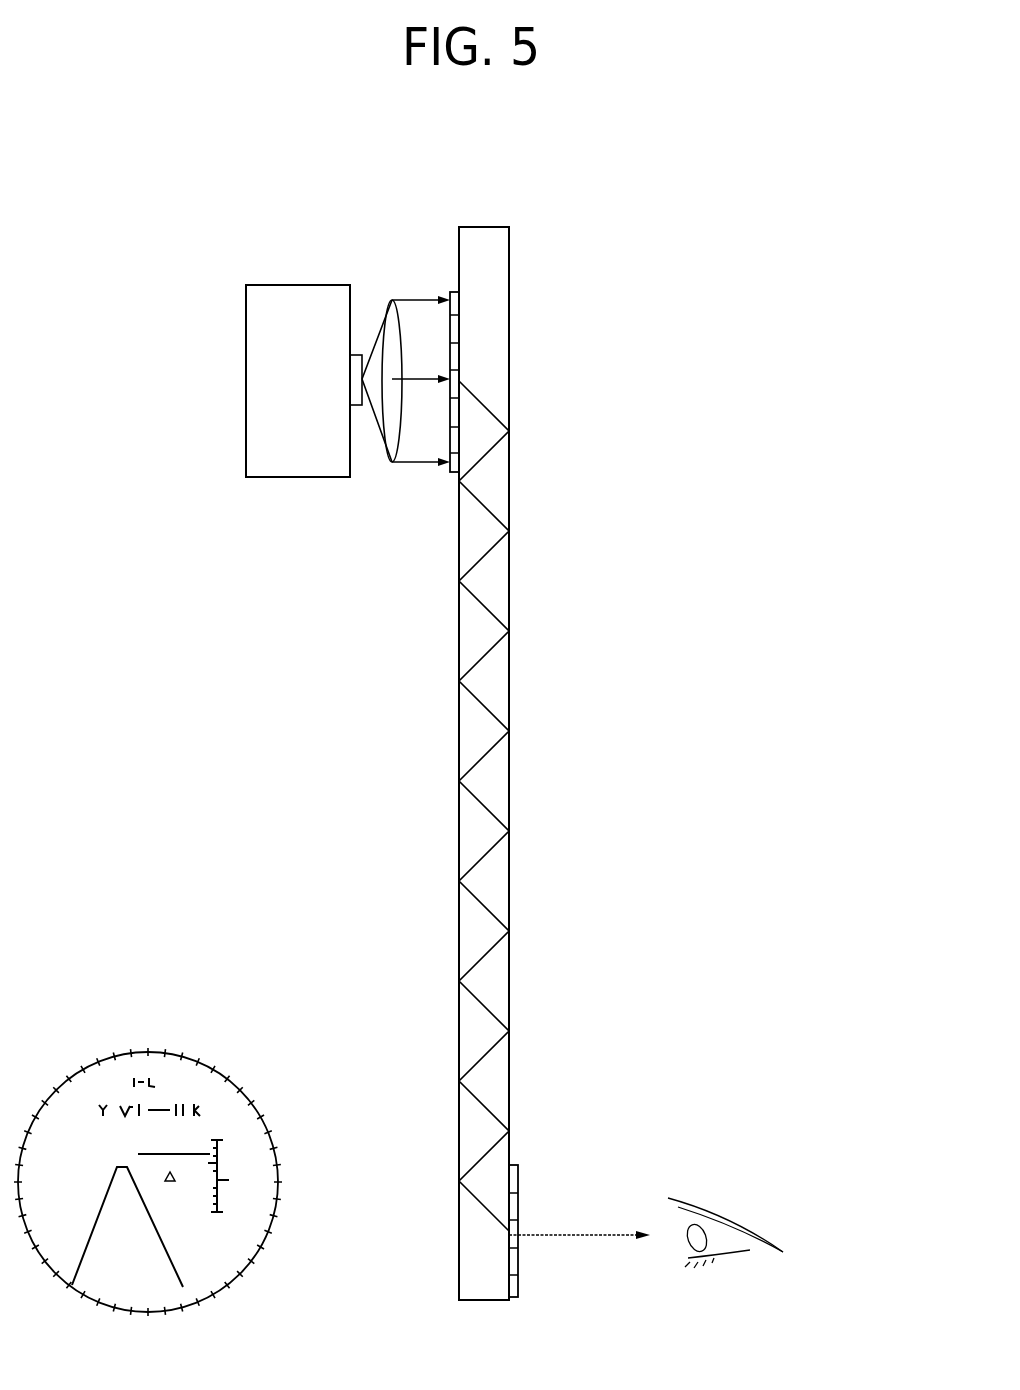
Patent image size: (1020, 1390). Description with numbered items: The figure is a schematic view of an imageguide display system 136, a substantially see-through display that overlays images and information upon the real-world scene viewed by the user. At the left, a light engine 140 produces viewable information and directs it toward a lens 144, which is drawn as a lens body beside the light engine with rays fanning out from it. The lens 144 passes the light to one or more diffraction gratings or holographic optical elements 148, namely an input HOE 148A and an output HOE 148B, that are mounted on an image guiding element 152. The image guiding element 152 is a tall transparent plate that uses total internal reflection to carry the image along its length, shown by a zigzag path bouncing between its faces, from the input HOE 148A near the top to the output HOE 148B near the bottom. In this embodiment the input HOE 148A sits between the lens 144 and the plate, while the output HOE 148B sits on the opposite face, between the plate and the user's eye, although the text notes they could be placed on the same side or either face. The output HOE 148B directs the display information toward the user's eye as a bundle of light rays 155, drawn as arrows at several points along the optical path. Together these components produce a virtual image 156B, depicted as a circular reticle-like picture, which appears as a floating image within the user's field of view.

The imageguide display system 136 is at (747, 465).
The light engine 140 is at (292, 477).
The lens 144 is at (392, 300).
The diffraction gratings or holographic optical elements (HOE) 148 is at (435, 198).
The input HOE 148A is at (455, 473).
The output HOE 148B is at (517, 1165).
The image guiding element 152 is at (509, 775).
The light rays 155 is at (401, 485).
The virtual image 156B is at (162, 1027).